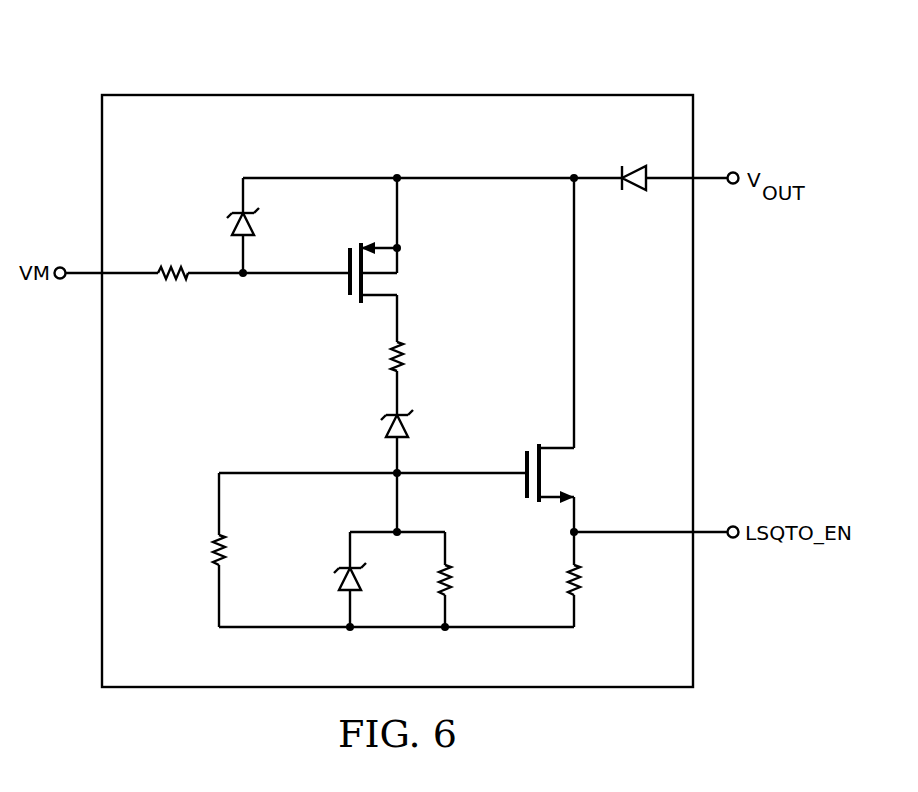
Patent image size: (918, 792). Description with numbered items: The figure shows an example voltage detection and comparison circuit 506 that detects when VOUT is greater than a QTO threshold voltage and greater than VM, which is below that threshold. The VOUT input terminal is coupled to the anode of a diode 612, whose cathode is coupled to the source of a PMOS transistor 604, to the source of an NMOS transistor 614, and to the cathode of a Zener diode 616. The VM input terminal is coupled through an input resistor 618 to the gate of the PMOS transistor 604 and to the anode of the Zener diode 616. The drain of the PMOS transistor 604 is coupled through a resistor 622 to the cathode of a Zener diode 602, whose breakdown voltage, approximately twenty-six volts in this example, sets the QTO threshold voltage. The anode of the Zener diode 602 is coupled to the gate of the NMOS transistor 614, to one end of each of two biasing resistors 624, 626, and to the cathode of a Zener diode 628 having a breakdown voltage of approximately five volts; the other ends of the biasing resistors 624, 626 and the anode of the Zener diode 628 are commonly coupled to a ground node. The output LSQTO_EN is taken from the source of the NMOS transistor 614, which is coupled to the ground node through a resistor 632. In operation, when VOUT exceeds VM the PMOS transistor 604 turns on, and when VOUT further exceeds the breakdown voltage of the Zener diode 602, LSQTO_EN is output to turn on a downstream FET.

The voltage detection and comparison circuit 506 is at (224, 90).
The Zener diode 602 is at (387, 417).
The PMOS transistor 604 is at (347, 286).
The diode 612 is at (630, 168).
The NMOS transistor 614 is at (525, 481).
The Zener diode 616 is at (232, 214).
The input resistor 618 is at (171, 283).
The resistor 622 is at (405, 358).
The biasing resistor 624 is at (213, 548).
The biasing resistor 626 is at (452, 584).
The Zener diode 628 is at (341, 574).
The resistor 632 is at (579, 582).